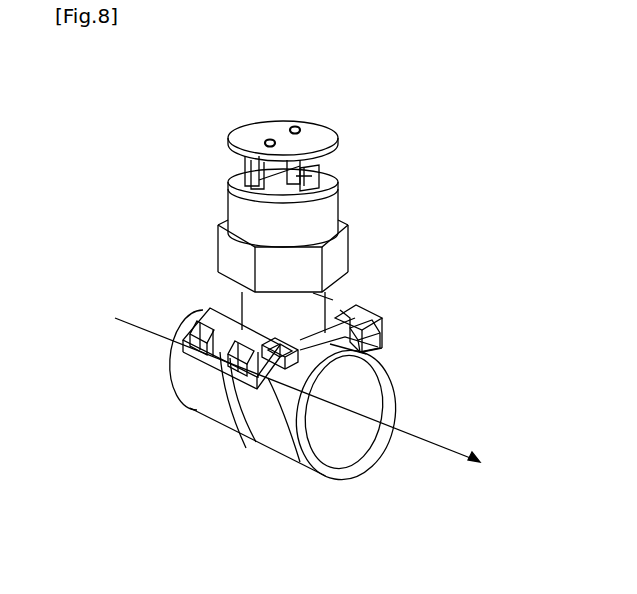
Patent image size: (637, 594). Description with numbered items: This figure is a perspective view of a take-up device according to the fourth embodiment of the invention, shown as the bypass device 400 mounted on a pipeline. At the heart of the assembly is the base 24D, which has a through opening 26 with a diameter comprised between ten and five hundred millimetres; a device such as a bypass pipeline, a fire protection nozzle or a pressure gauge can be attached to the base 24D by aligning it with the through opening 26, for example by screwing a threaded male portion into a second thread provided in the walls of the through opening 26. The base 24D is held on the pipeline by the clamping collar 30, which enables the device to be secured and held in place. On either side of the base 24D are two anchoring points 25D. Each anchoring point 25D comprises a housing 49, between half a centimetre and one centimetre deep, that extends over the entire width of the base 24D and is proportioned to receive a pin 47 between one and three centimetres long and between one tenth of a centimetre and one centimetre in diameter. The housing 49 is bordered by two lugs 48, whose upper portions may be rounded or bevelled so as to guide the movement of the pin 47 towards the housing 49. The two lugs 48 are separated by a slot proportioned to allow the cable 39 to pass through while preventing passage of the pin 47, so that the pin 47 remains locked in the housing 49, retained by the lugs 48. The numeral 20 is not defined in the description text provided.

The bypass device 400 is at (304, 100).
The valve body 20 is at (340, 222).
The through opening 26 is at (331, 291).
The base 24D is at (350, 319).
The anchoring point 25D is at (213, 316).
The pin 47 is at (364, 331).
The lugs 48 is at (188, 337).
The housing 49 is at (257, 384).
The clamping collar 30 is at (213, 399).
The cable 39 is at (241, 436).